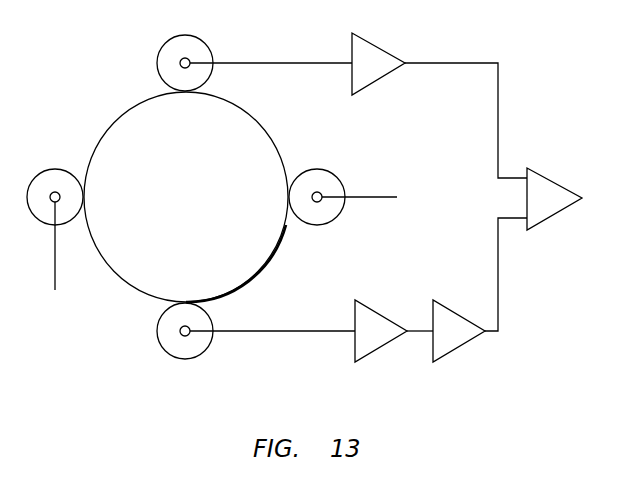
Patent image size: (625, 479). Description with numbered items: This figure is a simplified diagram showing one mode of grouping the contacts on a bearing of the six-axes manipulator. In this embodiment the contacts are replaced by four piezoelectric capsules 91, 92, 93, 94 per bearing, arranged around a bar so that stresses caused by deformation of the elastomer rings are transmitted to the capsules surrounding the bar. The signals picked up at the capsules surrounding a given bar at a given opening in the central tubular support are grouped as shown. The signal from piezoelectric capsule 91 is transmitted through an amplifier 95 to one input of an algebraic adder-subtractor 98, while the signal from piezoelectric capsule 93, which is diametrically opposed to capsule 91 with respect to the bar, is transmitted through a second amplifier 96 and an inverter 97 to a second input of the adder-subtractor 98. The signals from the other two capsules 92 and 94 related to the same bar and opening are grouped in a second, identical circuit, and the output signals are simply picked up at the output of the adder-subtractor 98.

The piezoelectric capsule 91 is at (205, 52).
The piezoelectric capsule 92 is at (333, 185).
The piezoelectric capsule 93 is at (202, 320).
The piezoelectric capsule 94 is at (57, 182).
The amplifier 95 is at (383, 52).
The second amplifier 96 is at (372, 338).
The inverter 97 is at (463, 335).
The algebraic adder-subtractor 98 is at (545, 187).